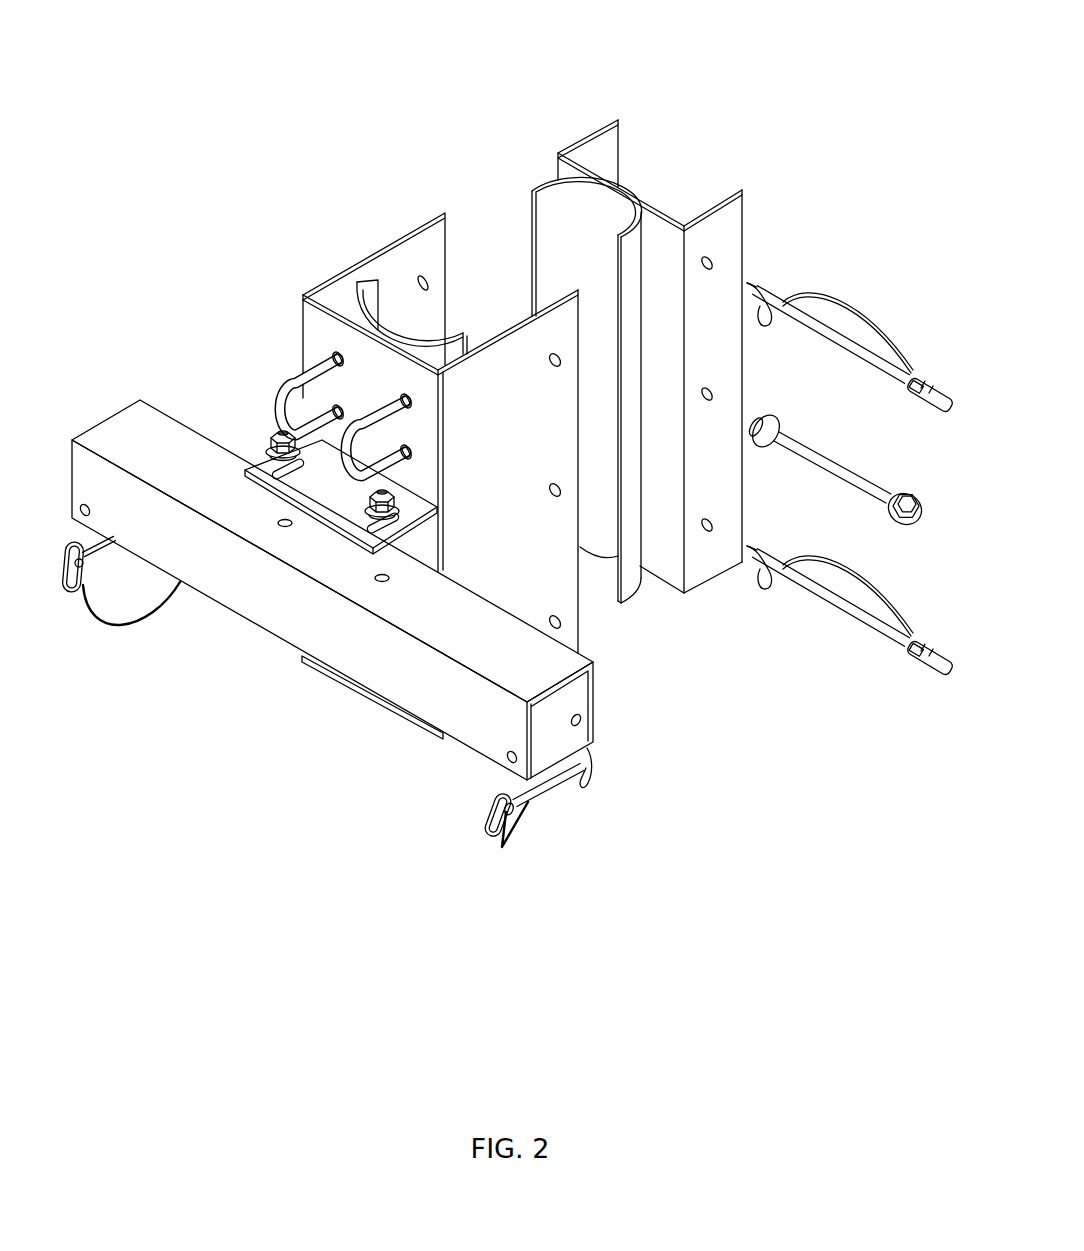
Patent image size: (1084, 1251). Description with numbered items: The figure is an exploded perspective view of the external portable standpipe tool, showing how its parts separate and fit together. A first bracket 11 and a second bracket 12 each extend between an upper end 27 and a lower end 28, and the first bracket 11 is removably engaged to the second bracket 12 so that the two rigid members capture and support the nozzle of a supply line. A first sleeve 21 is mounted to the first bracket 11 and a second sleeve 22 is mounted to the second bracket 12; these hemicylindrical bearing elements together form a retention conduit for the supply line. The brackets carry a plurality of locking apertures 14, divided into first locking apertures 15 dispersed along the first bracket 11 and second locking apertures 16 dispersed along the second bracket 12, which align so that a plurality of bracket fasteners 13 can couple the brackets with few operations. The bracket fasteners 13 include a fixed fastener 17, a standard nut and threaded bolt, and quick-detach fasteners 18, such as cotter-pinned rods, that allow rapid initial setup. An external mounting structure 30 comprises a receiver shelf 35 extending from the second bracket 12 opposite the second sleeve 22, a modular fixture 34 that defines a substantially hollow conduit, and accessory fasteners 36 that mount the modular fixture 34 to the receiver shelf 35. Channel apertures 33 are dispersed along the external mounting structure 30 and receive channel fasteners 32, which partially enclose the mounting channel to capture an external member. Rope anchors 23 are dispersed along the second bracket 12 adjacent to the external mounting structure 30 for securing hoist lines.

The upper end 27 is at (394, 194).
The lower end 28 is at (670, 722).
The first bracket 11 is at (613, 140).
The first sleeve 21 is at (543, 197).
The second bracket 12 is at (387, 273).
The second sleeve 22 is at (458, 330).
The rope anchors 23 is at (292, 400).
The receiver shelf 35 is at (340, 498).
The accessory fastener 36 is at (267, 442).
The external mounting structure 30 is at (313, 630).
The modular fixture 34 is at (411, 619).
The channel apertures 33 is at (78, 509).
The channel fasteners 32 is at (93, 557).
The locking apertures 14 is at (647, 428).
The first locking apertures 15 is at (718, 265).
The second locking apertures 16 is at (563, 366).
The bracket fasteners 13 is at (854, 476).
The fixed fastener 17 is at (797, 450).
The quick-detach fastener 18 is at (840, 343).